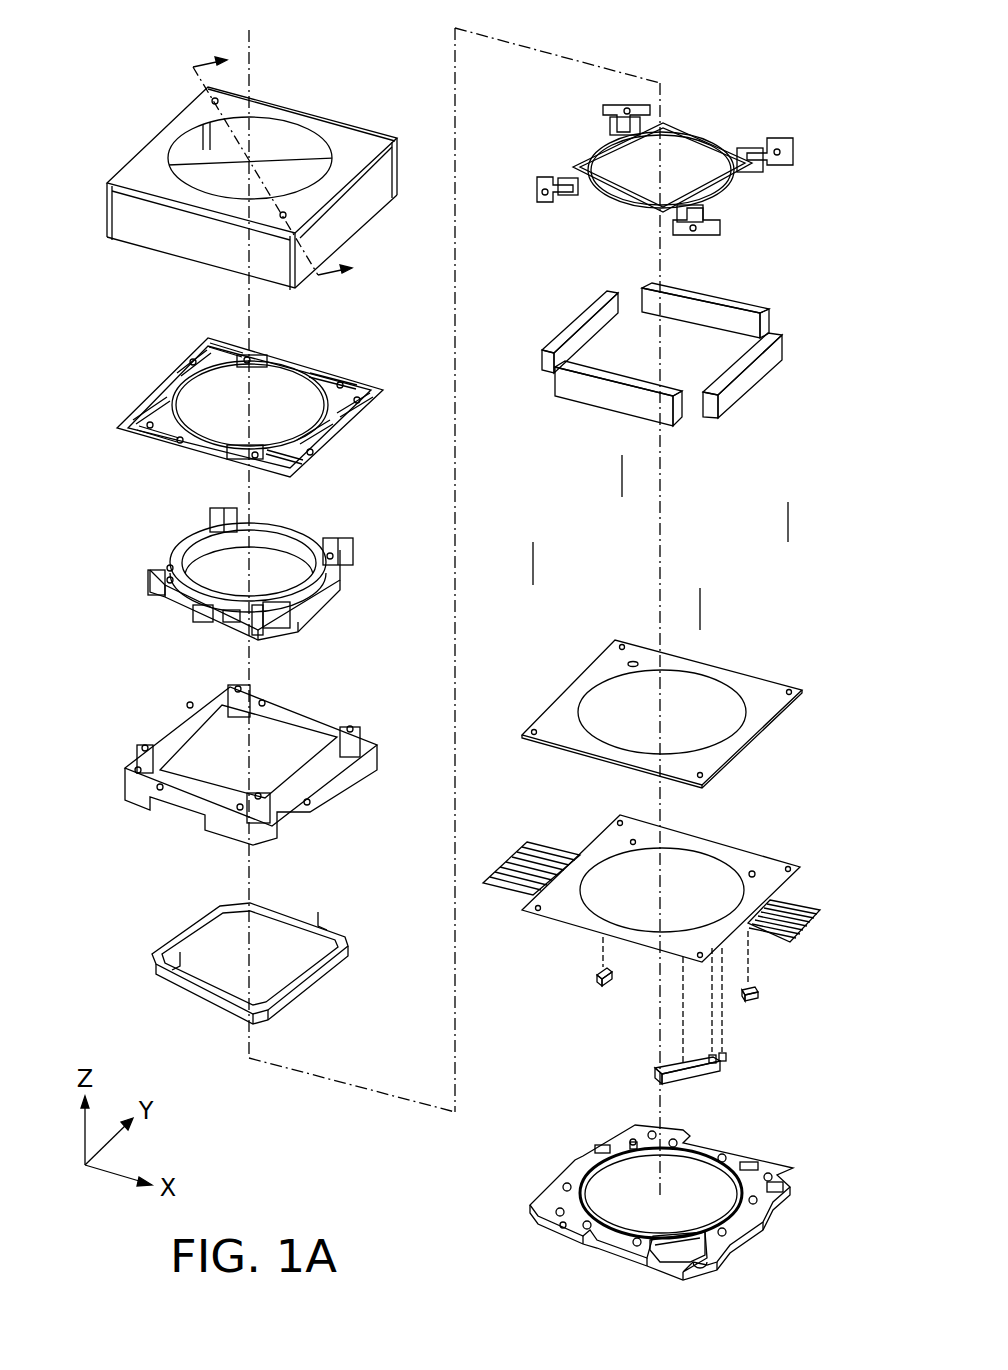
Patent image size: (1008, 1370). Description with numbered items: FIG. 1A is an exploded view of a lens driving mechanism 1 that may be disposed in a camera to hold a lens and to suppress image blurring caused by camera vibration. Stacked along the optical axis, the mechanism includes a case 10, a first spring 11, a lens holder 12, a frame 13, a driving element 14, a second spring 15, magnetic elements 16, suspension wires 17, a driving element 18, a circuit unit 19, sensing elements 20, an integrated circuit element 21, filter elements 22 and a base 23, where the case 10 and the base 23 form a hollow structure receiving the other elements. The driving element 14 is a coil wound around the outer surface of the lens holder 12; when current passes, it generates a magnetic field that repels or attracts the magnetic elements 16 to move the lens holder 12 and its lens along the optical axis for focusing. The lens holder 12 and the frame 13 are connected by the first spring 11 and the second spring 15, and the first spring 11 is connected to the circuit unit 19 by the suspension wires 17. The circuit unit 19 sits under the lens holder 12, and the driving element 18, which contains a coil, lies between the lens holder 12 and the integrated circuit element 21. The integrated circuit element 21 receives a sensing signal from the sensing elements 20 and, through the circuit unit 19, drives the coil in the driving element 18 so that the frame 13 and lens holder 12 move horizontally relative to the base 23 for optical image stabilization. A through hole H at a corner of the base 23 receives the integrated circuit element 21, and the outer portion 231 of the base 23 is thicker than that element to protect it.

The lens driving mechanism 1 is at (79, 34).
The case 10 is at (143, 182).
The first spring 11 is at (140, 407).
The lens holder 12 is at (175, 558).
The frame 13 is at (150, 742).
The driving element 14 is at (182, 933).
The second spring 15 is at (783, 147).
The magnetic element 16 is at (602, 377).
The suspension wire 17 is at (533, 542).
The driving element 18 is at (770, 693).
The circuit unit 19 is at (770, 867).
The sensing element 20 is at (599, 983).
The integrated circuit element 21 is at (697, 1072).
The filter element 22 is at (713, 1064).
The base 23 is at (690, 1190).
The outer portion 231 is at (727, 1253).
The through hole H is at (647, 1253).